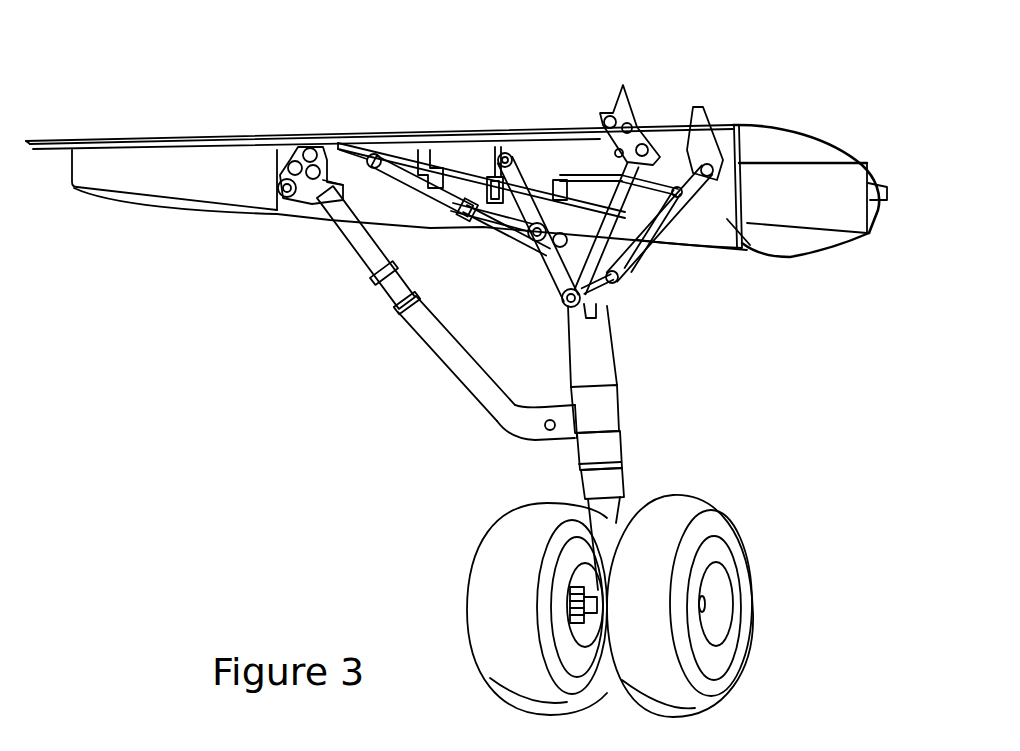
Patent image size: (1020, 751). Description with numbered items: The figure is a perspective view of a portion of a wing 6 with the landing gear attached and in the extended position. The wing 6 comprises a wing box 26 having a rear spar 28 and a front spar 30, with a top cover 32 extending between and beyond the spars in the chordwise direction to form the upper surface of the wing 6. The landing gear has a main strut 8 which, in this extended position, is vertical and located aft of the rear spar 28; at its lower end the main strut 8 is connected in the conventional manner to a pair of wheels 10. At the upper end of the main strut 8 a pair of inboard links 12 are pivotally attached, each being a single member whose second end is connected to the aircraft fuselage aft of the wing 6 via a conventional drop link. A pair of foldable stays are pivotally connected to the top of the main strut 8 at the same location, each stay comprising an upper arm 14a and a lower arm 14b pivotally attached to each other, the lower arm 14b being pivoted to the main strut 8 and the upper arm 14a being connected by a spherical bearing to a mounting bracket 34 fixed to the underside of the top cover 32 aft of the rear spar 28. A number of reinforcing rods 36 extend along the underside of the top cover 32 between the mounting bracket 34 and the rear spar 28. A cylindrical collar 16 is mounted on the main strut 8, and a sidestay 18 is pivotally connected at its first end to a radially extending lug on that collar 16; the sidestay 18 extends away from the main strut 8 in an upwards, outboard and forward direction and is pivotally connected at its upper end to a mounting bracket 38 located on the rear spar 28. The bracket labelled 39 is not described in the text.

The wing 6 is at (47, 126).
The main strut 8 is at (607, 443).
The pair of wheels 10 is at (667, 577).
The inboard links 12 is at (650, 250).
The upper arm 14a is at (503, 152).
The lower arm 14b is at (560, 243).
The cylindrical collar 16 is at (595, 412).
The sidestay 18 is at (470, 382).
The wing box 26 is at (835, 178).
The rear spar 28 is at (727, 219).
The front spar 30 is at (838, 203).
The top cover 32 is at (758, 114).
The mounting bracket 34 is at (447, 153).
The reinforcing rods 36 is at (393, 140).
The mounting bracket 38 is at (277, 192).
The pivot bracket 39 is at (628, 105).